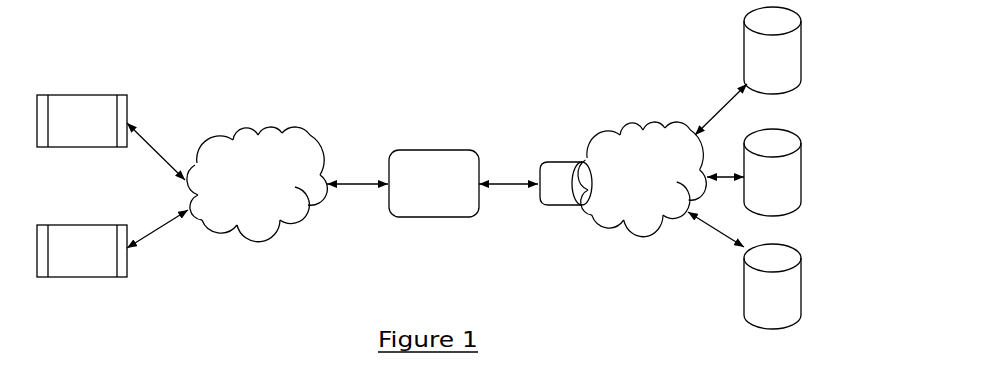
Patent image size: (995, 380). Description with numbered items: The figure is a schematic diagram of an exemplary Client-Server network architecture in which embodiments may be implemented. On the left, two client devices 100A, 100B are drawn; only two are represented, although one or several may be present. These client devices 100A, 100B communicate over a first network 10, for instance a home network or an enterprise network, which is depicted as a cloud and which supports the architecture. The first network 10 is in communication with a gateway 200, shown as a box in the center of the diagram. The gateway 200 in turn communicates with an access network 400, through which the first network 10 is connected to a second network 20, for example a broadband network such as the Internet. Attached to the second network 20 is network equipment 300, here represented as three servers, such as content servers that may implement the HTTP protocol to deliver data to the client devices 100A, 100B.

The client device 100A is at (117, 95).
The client device 100B is at (75, 225).
The first network 10 is at (308, 130).
The gateway 200 is at (472, 150).
The access network 400 is at (559, 207).
The second network 20 is at (648, 120).
The network equipment 300 is at (801, 28).